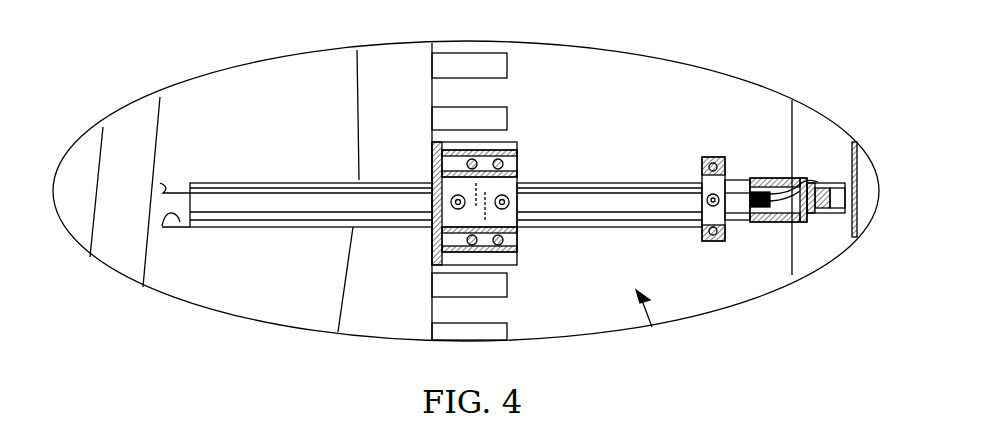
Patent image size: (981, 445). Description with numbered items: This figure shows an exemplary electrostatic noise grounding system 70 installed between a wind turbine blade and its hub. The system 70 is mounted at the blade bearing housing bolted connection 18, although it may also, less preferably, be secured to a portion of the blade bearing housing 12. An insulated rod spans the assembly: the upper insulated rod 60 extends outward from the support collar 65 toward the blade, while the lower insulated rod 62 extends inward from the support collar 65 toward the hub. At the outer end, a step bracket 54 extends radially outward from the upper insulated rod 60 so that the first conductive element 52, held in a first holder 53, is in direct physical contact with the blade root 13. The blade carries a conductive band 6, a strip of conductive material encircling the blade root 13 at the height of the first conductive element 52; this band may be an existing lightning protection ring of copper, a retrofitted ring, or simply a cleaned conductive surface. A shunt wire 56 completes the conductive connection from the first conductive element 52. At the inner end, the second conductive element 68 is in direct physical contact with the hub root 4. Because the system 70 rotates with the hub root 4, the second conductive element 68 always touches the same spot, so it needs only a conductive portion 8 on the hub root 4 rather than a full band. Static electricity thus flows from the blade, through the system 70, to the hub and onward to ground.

The blade bearing housing 12 is at (243, 81).
The hub root 4 is at (121, 206).
The blade bearing housing bolted connection 18 is at (383, 131).
The blade root 13 is at (607, 129).
The conductive band 6 is at (803, 136).
The conductive portion 8 is at (161, 178).
The second conductive element 68 is at (170, 228).
The lower insulated rod 62 is at (262, 222).
The support collar 65 is at (448, 214).
The upper insulated rod 60 is at (604, 224).
The step bracket 54 is at (765, 224).
The shunt wire 56 is at (778, 184).
The first conductive element 52 is at (822, 182).
The first holder 53 is at (824, 214).
The electrostatic noise grounding system 70 is at (653, 330).